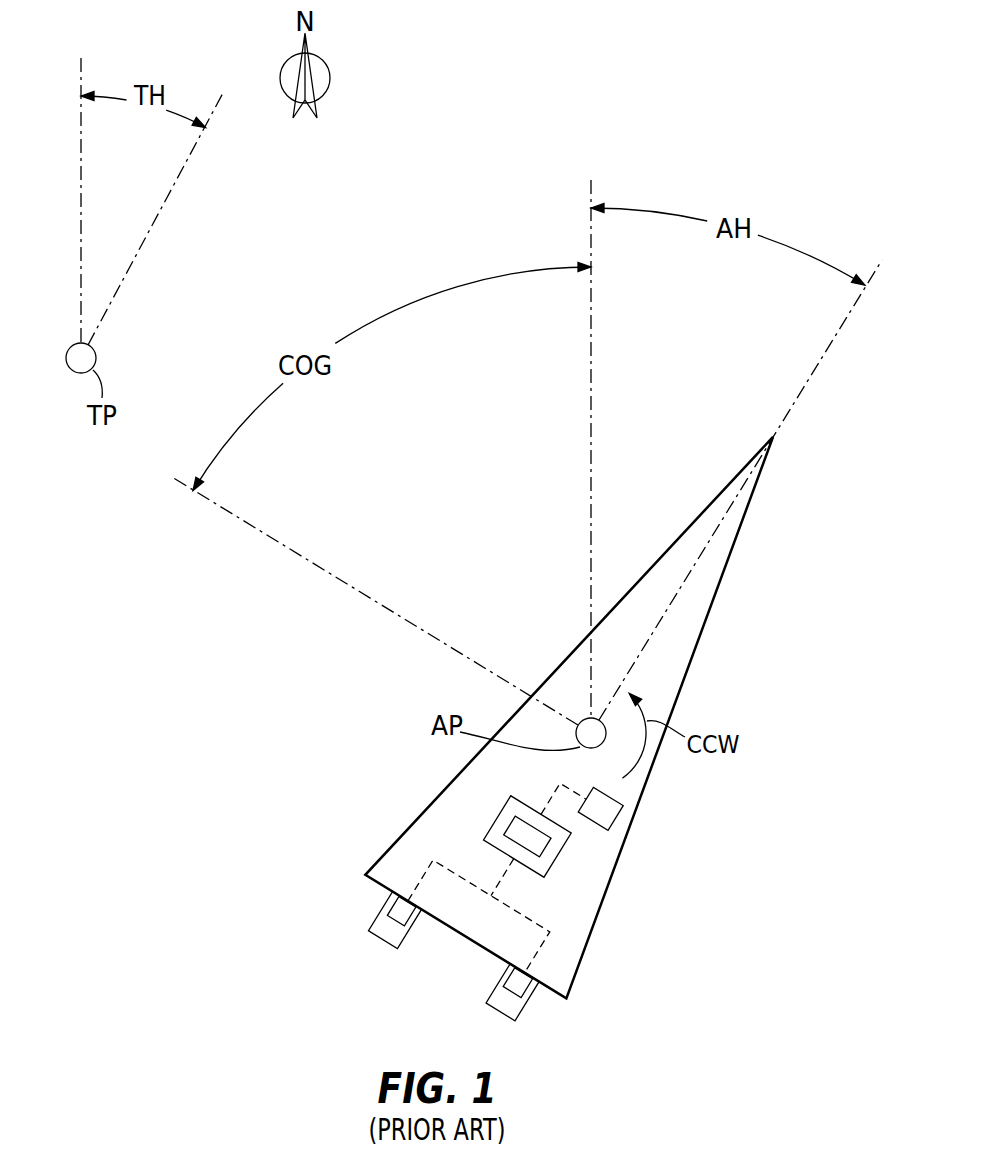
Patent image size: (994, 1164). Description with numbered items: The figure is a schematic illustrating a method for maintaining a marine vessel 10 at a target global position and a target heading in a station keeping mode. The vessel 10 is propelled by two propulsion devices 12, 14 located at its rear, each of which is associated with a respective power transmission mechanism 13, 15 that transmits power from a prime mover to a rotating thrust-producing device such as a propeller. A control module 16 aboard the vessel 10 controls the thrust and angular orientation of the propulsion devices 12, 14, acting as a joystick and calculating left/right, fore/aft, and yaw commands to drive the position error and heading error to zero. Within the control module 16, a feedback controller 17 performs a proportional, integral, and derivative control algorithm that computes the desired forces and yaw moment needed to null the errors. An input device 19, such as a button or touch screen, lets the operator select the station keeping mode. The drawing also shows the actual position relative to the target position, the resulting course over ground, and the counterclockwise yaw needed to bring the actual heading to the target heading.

The marine vessel 10 is at (695, 655).
The propulsion device 12 is at (381, 913).
The power transmission mechanism 13 is at (400, 921).
The propulsion device 14 is at (498, 983).
The power transmission mechanism 15 is at (516, 993).
The control module 16 is at (555, 862).
The feedback controller 17 is at (506, 820).
The input device 19 is at (613, 817).